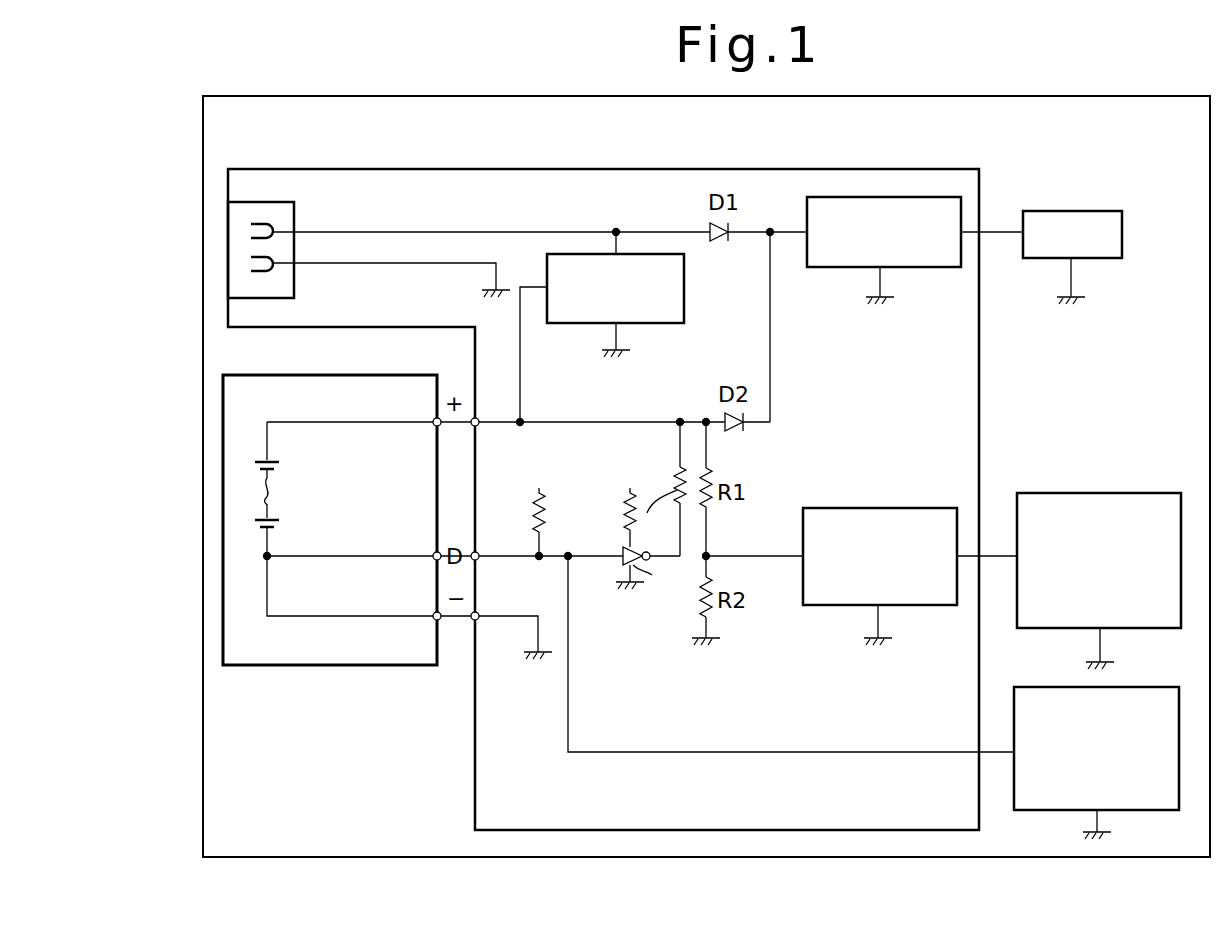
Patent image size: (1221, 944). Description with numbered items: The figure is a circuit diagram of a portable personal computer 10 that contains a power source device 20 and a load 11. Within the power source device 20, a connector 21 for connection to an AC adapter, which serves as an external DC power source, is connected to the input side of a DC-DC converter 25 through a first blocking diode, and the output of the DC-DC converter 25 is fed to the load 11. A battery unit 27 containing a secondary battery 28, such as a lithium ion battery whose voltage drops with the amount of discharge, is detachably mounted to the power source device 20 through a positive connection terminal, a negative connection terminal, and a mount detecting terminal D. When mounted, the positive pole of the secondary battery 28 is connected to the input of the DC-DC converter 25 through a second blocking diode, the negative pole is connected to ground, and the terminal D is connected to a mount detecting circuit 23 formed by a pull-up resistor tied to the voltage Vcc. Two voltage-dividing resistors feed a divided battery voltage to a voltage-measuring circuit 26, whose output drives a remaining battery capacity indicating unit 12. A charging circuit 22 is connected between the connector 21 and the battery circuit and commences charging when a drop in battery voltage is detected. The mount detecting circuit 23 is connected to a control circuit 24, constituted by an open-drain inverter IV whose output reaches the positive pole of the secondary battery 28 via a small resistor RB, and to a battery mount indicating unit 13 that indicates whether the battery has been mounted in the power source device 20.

The portable personal computer 10 is at (203, 135).
The load 11 is at (1122, 242).
The remaining battery capacity indicating unit 12 is at (1158, 493).
The battery mount indicating unit 13 is at (1168, 687).
The power source device 20 is at (980, 192).
The connector 21 is at (248, 202).
The charging circuit 22 is at (687, 291).
The mount detecting circuit 23 is at (537, 544).
The control circuit 24 is at (627, 573).
The DC-DC converter 25 is at (927, 267).
The voltage-measuring circuit 26 is at (932, 508).
The battery unit 27 is at (355, 665).
The secondary battery 28 is at (277, 495).